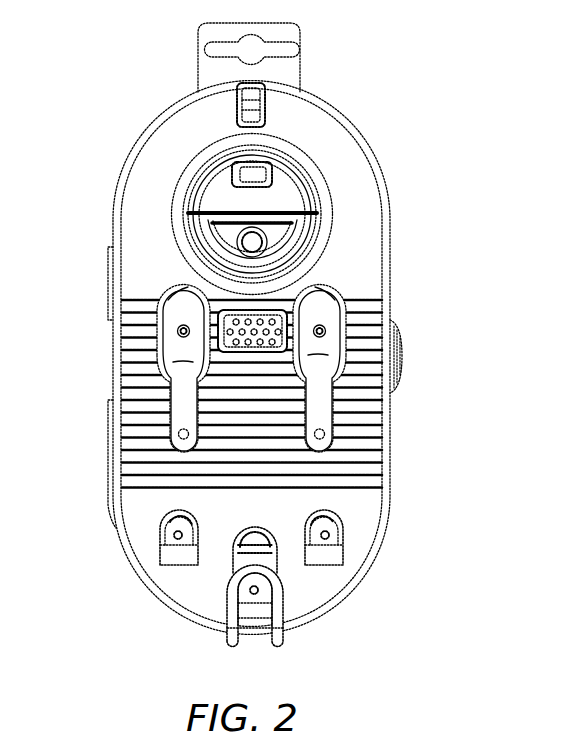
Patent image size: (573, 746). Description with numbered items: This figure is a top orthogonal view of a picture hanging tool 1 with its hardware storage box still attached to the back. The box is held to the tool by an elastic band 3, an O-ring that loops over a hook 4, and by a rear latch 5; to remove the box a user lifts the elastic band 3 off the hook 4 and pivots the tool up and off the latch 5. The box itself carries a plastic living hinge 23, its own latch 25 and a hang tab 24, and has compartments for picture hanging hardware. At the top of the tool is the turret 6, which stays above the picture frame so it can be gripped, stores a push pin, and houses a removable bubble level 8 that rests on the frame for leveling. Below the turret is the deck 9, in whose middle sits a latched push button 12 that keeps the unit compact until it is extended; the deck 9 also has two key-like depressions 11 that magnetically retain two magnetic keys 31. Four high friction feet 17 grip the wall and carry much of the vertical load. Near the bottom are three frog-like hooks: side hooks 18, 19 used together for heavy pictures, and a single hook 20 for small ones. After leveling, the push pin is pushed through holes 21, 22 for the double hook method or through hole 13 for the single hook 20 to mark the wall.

The picture hanging tool 1 is at (417, 136).
The elastic band 3 is at (283, 606).
The hook 4 is at (263, 627).
The latch 5 is at (267, 83).
The turret 6 is at (290, 150).
The bubble level 8 is at (302, 182).
The deck 9 is at (350, 226).
The key-like depressions 11 is at (178, 290).
The latched push button 12 is at (200, 254).
The hole 13 is at (236, 588).
The high friction feet 17 is at (214, 200).
The side hook 18 is at (364, 539).
The side hook 19 is at (140, 537).
The hook 20 is at (255, 600).
The hole 21 is at (162, 520).
The hole 22 is at (343, 522).
The plastic living hinge 23 is at (108, 302).
The hang tab 24 is at (298, 31).
The latch 25 is at (405, 333).
The magnetic keys 31 is at (173, 362).